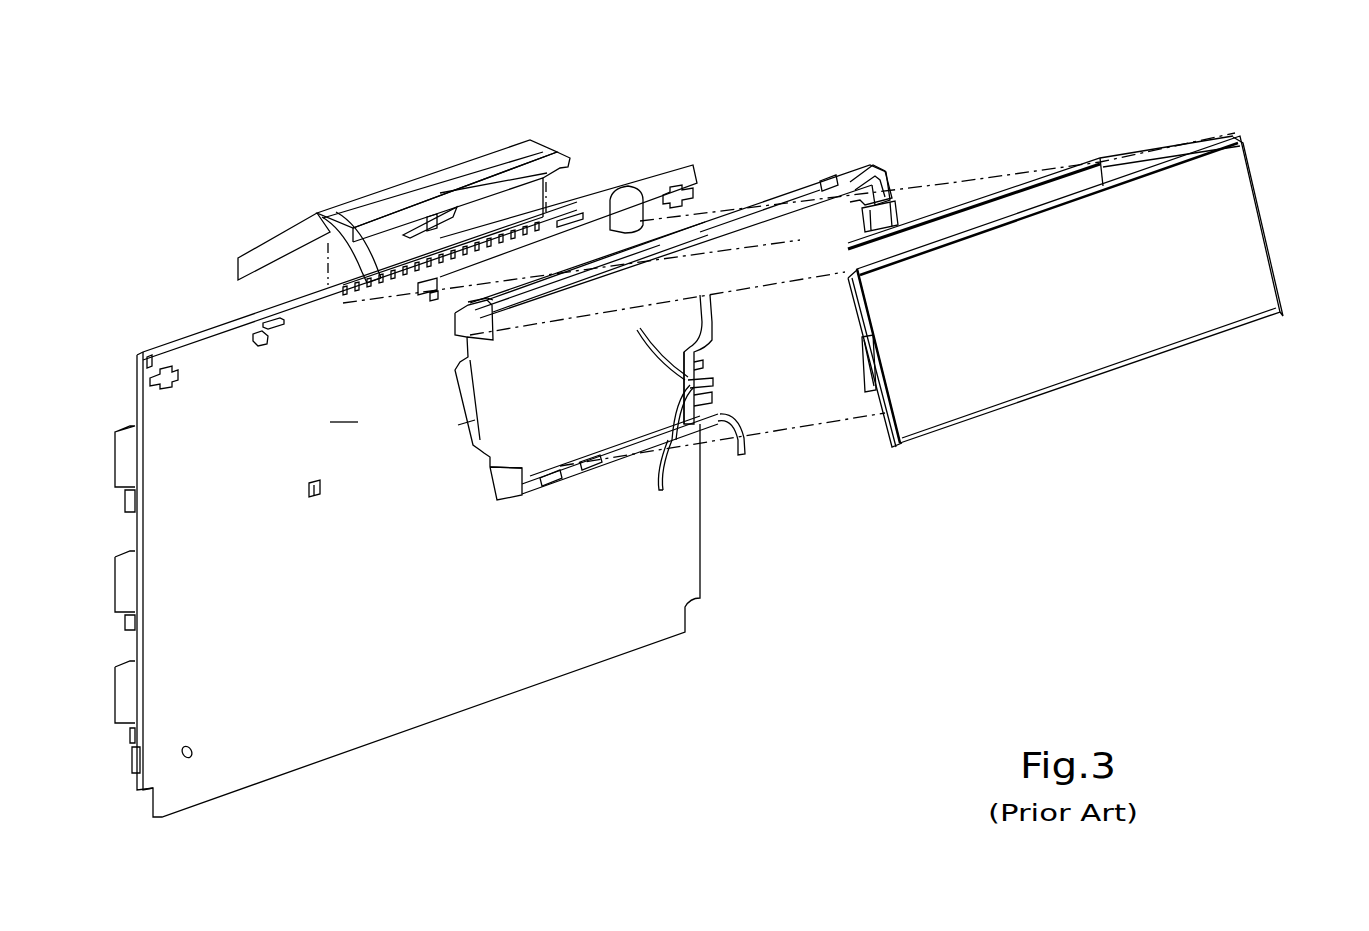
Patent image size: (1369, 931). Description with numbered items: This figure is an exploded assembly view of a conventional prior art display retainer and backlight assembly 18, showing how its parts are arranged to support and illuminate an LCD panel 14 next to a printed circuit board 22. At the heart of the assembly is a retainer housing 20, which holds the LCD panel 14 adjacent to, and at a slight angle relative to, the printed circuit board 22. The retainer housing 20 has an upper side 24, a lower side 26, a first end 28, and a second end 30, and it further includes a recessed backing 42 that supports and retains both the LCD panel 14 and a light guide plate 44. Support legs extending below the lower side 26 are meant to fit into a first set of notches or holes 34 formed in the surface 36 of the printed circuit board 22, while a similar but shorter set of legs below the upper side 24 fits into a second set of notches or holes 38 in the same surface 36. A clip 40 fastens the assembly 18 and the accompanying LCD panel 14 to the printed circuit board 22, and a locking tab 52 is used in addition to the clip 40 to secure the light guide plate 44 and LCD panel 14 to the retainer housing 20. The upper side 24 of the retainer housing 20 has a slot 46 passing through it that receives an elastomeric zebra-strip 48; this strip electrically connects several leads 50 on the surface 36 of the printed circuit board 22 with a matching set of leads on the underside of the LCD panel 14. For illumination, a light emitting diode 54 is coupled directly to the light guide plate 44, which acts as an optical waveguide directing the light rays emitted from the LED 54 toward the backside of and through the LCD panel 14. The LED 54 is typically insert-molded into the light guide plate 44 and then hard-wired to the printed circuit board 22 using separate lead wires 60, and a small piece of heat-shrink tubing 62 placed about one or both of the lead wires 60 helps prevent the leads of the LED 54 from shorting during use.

The LCD panel 14 is at (1245, 268).
The display retainer and backlight assembly 18 is at (878, 110).
The retainer housing 20 is at (500, 516).
The printed circuit board 22 is at (165, 527).
The upper side 24 is at (777, 180).
The lower side 26 is at (567, 500).
The first end 28 is at (480, 490).
The second end 30 is at (902, 176).
The first set of notches or holes 34 is at (316, 500).
The surface 36 is at (344, 414).
The second set of notches or holes 38 is at (270, 316).
The clip 40 is at (478, 170).
The recessed backing 42 is at (497, 432).
The light guide plate 44 is at (753, 447).
The slot 46 is at (752, 214).
The elastomeric zebra-strip 48 is at (640, 218).
The leads 50 is at (336, 226).
The locking tab 52 is at (968, 182).
The light emitting diode (LED) 54 is at (712, 390).
The lead wires 60 is at (650, 371).
The heat-shrink tubing 62 is at (680, 394).